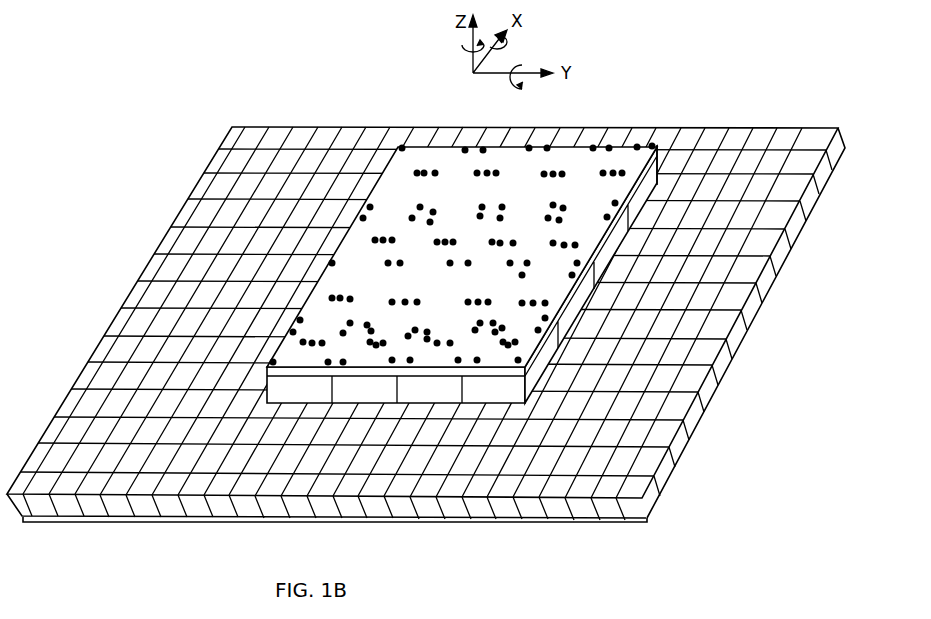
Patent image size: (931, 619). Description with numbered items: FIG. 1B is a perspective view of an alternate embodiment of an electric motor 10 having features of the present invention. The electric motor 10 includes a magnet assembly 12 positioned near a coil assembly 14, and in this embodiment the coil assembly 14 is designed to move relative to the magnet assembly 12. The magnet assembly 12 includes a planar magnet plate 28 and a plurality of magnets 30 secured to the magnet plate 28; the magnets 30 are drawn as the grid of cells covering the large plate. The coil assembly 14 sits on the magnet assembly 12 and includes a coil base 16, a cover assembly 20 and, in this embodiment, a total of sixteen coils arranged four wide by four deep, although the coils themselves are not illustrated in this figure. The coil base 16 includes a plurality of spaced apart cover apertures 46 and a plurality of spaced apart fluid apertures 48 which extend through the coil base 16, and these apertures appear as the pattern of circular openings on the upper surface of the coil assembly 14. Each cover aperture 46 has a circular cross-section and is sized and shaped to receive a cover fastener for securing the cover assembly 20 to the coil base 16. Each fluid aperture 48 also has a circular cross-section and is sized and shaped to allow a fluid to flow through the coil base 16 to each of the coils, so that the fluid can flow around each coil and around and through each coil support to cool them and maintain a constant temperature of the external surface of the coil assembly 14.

The electric motor 10 is at (593, 124).
The magnet assembly 12 is at (680, 449).
The coil assembly 14 is at (638, 148).
The coil base 16 is at (422, 148).
The cover assembly 20 is at (661, 158).
The magnet plate 28 is at (615, 518).
The magnets 30 is at (25, 512).
The cover apertures 46 is at (400, 144).
The fluid apertures 48 is at (404, 173).